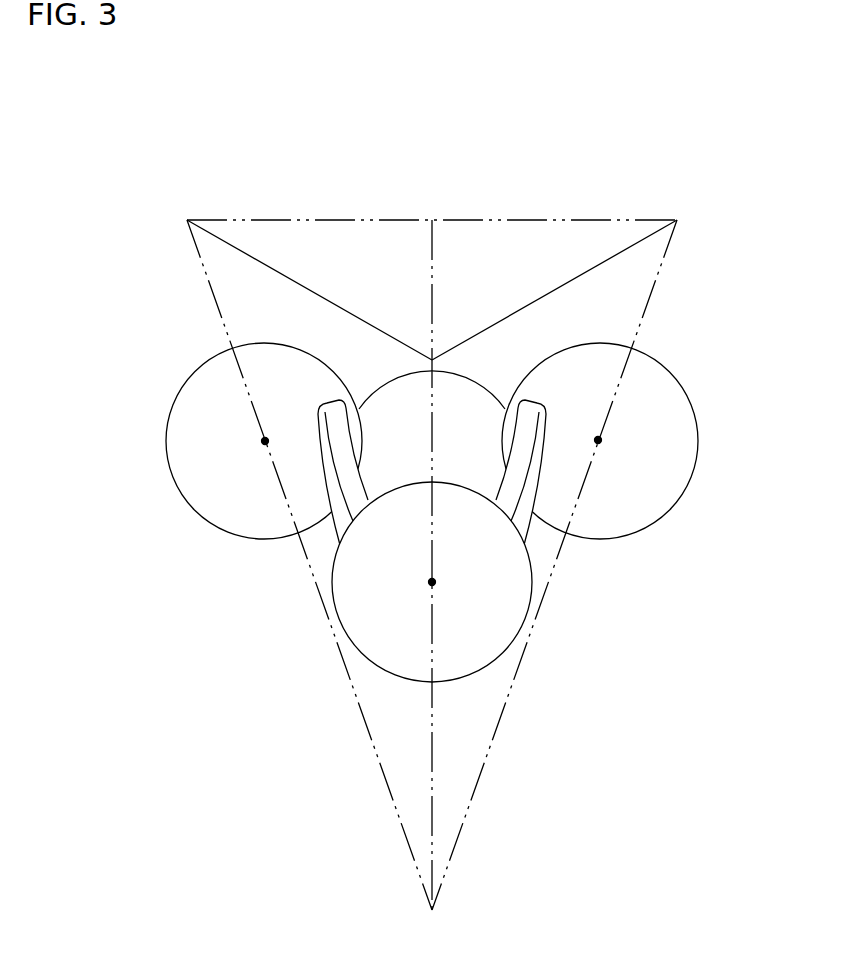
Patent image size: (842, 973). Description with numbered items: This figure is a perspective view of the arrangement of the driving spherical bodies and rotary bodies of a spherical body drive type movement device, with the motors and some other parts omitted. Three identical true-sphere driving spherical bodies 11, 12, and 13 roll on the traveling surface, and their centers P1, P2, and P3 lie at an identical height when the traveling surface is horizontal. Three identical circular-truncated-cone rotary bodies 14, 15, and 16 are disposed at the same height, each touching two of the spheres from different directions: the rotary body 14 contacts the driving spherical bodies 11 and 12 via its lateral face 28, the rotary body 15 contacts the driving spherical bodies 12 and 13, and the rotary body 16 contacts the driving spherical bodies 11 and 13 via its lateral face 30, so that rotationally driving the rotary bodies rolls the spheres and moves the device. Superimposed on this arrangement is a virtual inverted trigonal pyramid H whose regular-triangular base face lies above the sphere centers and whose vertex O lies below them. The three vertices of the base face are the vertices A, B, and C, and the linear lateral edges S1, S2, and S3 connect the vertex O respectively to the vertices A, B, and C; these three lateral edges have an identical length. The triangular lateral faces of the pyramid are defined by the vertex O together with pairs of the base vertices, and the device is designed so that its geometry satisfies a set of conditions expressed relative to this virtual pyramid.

The driving spherical body 11 is at (497, 628).
The driving spherical body 12 is at (676, 458).
The driving spherical body 13 is at (205, 489).
The rotary body 14 is at (534, 533).
The rotary body 15 is at (456, 398).
The rotary body 16 is at (330, 533).
The lateral face 28 is at (512, 460).
The lateral face 30 is at (340, 457).
The virtual inverted trigonal pyramid H is at (246, 172).
The vertex A is at (432, 360).
The vertex B is at (677, 220).
The vertex C is at (187, 220).
The vertex O is at (432, 910).
The center of the driving spherical body P1 is at (432, 582).
The center of the driving spherical body P2 is at (598, 440).
The center of the driving spherical body P3 is at (265, 441).
The lateral edge S1 is at (432, 783).
The lateral edge S2 is at (495, 742).
The lateral edge S3 is at (370, 743).